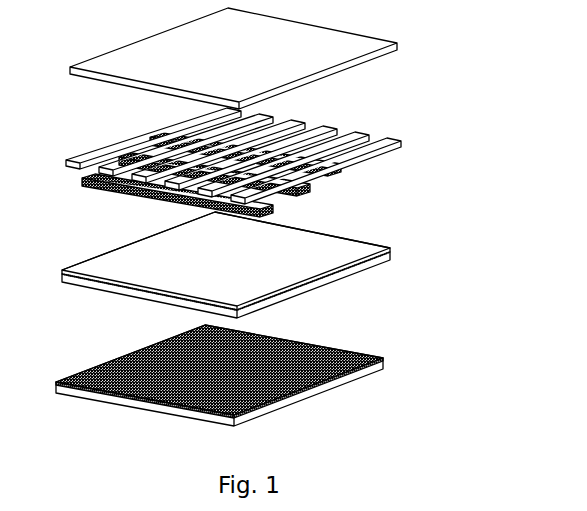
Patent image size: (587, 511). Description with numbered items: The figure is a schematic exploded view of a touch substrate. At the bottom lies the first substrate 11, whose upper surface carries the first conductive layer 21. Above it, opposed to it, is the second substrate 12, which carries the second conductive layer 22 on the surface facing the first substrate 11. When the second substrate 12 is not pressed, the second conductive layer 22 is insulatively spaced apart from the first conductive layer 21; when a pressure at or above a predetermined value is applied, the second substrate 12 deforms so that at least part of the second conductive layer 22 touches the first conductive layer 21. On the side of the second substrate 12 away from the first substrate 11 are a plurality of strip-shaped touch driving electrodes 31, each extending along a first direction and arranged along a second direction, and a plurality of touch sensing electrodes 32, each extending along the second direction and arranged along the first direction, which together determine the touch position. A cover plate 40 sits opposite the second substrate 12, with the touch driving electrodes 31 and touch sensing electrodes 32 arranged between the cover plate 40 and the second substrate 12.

The first substrate 11 is at (387, 367).
The first conductive layer 21 is at (385, 360).
The second substrate 12 is at (392, 247).
The second conductive layer 22 is at (395, 258).
The touch driving electrodes 31 is at (310, 184).
The touch sensing electrodes 32 is at (399, 140).
The cover plate 40 is at (400, 43).